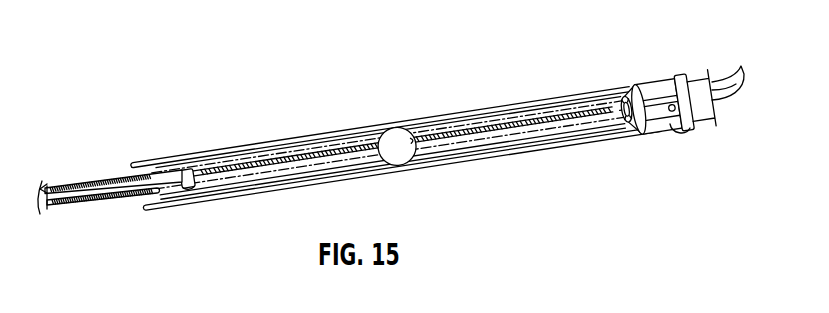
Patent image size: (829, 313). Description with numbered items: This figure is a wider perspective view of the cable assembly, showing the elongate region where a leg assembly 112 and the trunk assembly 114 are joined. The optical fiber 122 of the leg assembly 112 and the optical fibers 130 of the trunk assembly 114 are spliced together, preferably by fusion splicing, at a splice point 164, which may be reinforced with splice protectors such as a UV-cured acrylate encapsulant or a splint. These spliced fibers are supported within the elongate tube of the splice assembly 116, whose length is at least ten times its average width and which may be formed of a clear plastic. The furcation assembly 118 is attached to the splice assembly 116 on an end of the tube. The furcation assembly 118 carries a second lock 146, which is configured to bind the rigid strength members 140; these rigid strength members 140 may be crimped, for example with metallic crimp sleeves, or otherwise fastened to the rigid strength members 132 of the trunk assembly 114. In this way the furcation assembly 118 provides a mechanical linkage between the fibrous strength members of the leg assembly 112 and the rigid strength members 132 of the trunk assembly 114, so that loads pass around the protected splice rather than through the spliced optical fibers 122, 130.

The leg assembly 112 is at (742, 70).
The trunk assembly 114 is at (47, 213).
The splice assembly 116 is at (557, 175).
The furcation assembly 118 is at (666, 105).
The optical fiber 122 is at (388, 148).
The optical fibers 130 is at (397, 147).
The strength members 132 is at (124, 165).
The rigid strength members 140 is at (395, 147).
The second lock 146 is at (670, 132).
The splice points 164 is at (396, 146).